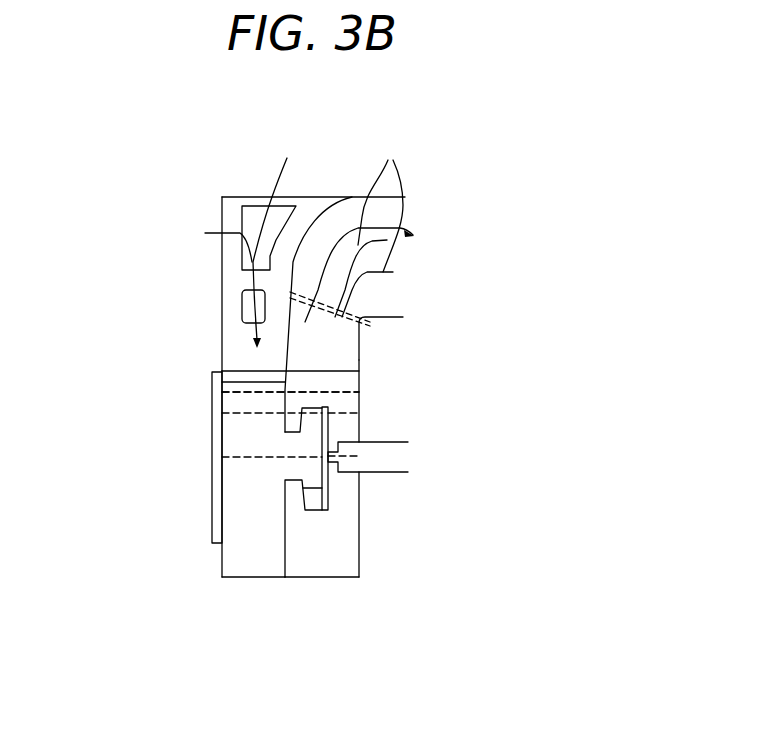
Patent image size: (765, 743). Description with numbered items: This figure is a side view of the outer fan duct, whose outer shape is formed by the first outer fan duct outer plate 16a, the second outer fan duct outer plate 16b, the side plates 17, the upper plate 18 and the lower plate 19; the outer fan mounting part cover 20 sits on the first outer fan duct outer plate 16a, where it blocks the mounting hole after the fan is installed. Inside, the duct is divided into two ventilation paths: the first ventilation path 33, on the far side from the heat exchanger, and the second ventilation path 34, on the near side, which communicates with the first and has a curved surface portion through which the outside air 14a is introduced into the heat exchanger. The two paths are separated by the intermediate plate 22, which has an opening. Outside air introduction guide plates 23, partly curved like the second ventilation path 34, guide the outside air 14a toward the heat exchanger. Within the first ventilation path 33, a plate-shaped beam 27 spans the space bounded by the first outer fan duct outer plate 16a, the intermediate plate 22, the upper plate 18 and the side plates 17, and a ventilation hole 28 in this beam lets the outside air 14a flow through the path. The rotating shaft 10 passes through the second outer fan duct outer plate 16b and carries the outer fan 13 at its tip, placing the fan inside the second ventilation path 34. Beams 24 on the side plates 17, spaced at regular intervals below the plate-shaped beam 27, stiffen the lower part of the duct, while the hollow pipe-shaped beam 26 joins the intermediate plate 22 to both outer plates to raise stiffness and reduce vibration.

The rotating shaft 10 is at (387, 450).
The outer fan 13 is at (328, 433).
The outside air 14a is at (333, 243).
The first outer fan duct outer plate 16a is at (222, 353).
The second outer fan duct outer plate 16b is at (358, 510).
The side plate 17 is at (255, 563).
The upper plate 18 is at (253, 197).
The lower plate 19 is at (322, 577).
The outer fan mounting part cover 20 is at (212, 513).
The intermediate plate 22 is at (290, 550).
The outside air introduction guide plate 23 is at (348, 228).
The beam 24 is at (223, 382).
The pipe-shaped beam 26 is at (337, 385).
The plate-shaped beam 27 is at (232, 208).
The ventilation hole 28 is at (240, 297).
The first ventilation path 33 is at (238, 330).
The second ventilation path 34 is at (348, 350).